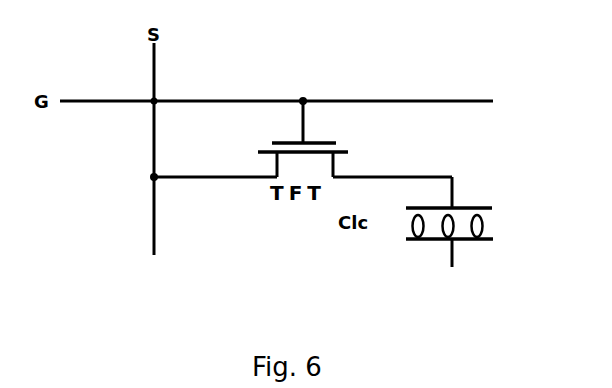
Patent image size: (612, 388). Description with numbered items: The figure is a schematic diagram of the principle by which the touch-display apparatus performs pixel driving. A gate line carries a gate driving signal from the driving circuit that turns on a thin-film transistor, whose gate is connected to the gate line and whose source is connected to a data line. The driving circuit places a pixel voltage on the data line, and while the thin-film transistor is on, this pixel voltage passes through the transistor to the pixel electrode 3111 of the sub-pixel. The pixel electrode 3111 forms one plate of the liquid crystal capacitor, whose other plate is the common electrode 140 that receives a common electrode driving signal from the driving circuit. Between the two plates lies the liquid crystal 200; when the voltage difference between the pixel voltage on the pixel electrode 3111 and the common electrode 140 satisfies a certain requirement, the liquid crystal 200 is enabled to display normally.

The pixel electrode 3111 is at (462, 206).
The liquid crystal 200 is at (482, 229).
The common electrode 140 is at (427, 241).